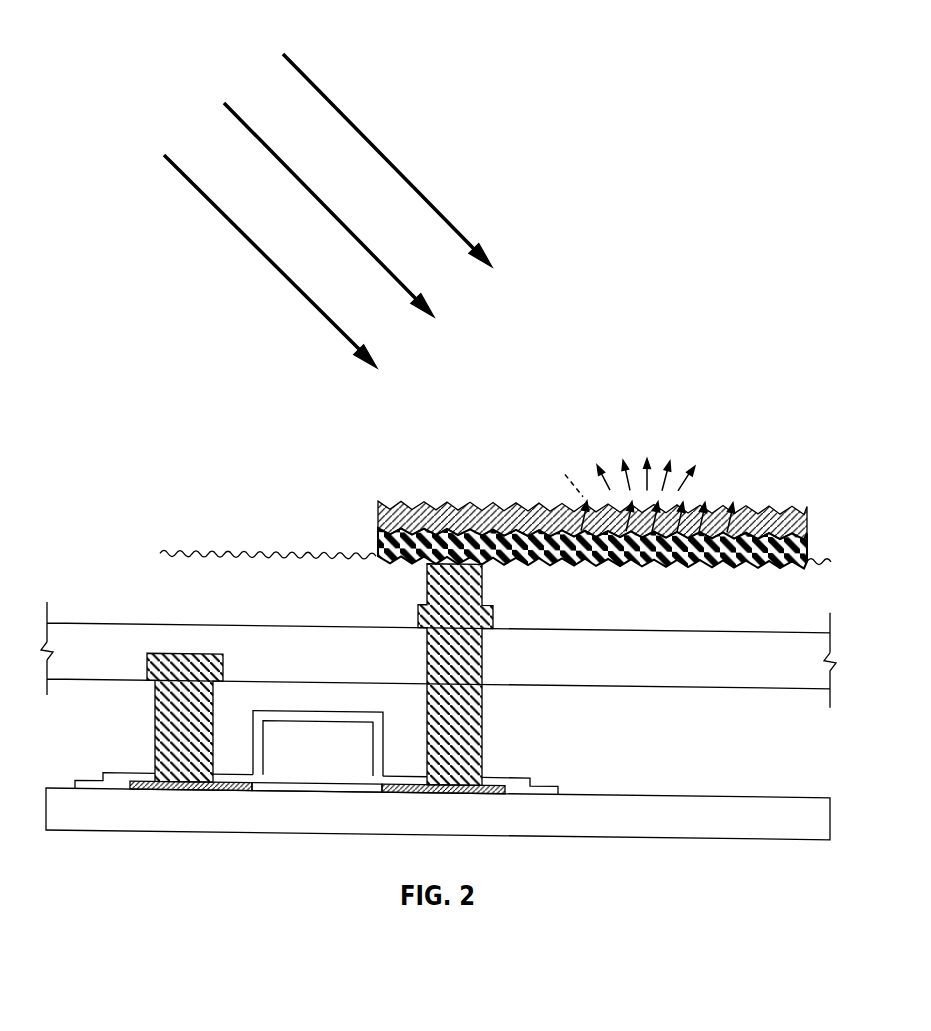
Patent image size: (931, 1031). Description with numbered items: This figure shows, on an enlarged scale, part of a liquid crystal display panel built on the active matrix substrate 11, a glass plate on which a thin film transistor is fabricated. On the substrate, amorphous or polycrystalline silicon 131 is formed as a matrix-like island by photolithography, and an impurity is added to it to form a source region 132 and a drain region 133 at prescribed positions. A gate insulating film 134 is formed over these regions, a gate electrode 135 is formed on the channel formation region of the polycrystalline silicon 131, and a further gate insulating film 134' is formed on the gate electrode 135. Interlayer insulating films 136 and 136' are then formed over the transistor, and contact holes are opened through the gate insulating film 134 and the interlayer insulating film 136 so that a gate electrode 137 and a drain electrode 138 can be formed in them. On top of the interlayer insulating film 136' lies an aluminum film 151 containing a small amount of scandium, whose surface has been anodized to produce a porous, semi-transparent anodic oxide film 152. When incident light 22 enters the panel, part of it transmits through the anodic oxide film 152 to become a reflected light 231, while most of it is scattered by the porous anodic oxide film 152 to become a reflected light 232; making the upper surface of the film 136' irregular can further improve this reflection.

The incident light 22 is at (233, 112).
The active matrix substrate 11 is at (775, 793).
The polycrystalline silicon 131 is at (322, 790).
The source region 132 is at (197, 790).
The drain region 133 is at (440, 790).
The gate insulating film 134 is at (340, 774).
The gate insulating film 134' is at (306, 725).
The gate electrode 135 is at (332, 723).
The interlayer insulating film 136 is at (468, 665).
The interlayer insulating film 136' is at (478, 539).
The gate electrode 137 is at (145, 665).
The drain electrode 138 is at (418, 611).
The aluminum film 151 is at (378, 547).
The anodic oxide film 152 is at (420, 497).
The reflected light 231 is at (693, 497).
The reflected light 232 is at (640, 473).